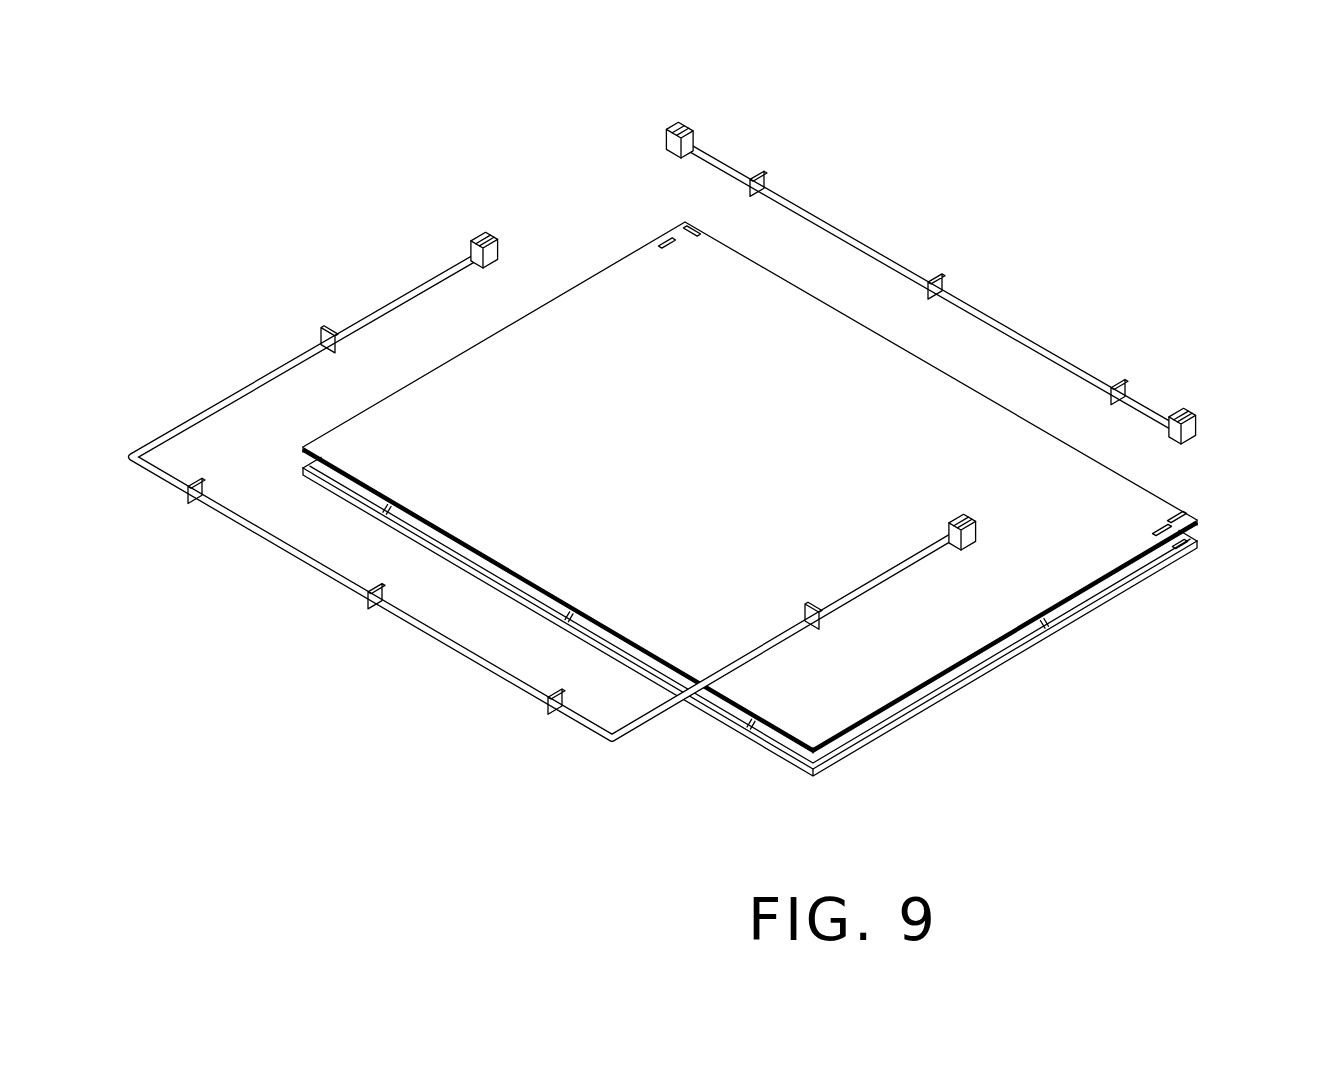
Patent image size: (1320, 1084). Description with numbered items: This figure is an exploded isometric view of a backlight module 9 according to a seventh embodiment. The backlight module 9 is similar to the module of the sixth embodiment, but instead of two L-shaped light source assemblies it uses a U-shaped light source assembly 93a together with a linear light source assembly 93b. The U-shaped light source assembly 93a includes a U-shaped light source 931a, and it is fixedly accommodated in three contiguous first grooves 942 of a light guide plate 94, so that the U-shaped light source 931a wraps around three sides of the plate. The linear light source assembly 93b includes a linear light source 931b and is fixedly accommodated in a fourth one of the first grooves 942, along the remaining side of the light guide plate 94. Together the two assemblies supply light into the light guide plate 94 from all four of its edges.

The backlight module 9 is at (501, 106).
The light guide plate 94 is at (1172, 492).
The first grooves 942 is at (858, 735).
The U-shaped light source assembly 93a is at (410, 651).
The U-shaped light source 931a is at (333, 575).
The linear light source assembly 93b is at (958, 265).
The linear light source 931b is at (822, 218).